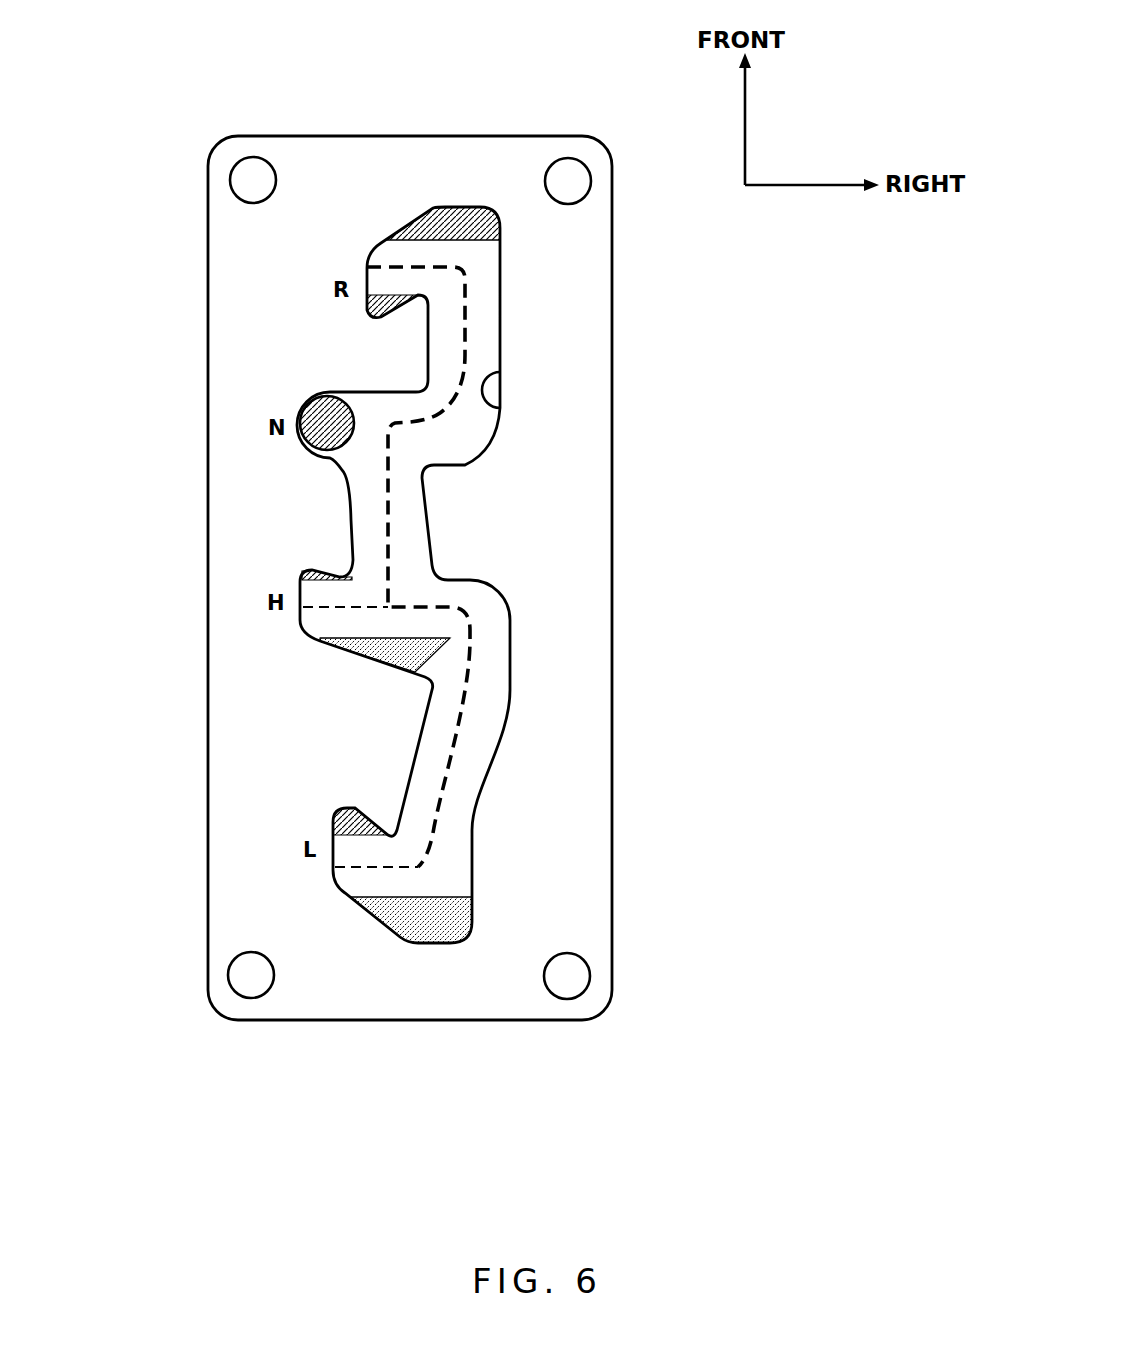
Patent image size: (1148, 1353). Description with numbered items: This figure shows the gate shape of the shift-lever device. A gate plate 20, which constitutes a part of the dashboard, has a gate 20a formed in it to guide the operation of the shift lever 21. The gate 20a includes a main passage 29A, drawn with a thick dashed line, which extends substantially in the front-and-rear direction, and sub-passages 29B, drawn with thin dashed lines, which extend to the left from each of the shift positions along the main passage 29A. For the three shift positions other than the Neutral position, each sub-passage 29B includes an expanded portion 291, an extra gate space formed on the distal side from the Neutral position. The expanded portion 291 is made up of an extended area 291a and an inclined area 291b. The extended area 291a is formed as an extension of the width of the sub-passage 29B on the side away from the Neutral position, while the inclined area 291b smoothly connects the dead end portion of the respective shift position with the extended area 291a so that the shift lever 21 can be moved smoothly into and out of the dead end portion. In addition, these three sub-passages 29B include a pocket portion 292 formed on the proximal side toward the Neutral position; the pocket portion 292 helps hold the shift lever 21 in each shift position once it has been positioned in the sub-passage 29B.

The gate plate 20 is at (593, 487).
The gate 20a is at (500, 363).
The shift lever 21 is at (300, 405).
The main passage 29A is at (472, 737).
The sub-passage 29B is at (413, 267).
The expanded portion 291 is at (321, 573).
The extended area 291a is at (468, 220).
The inclined area 291b is at (435, 208).
The pocket portion 292 is at (367, 312).